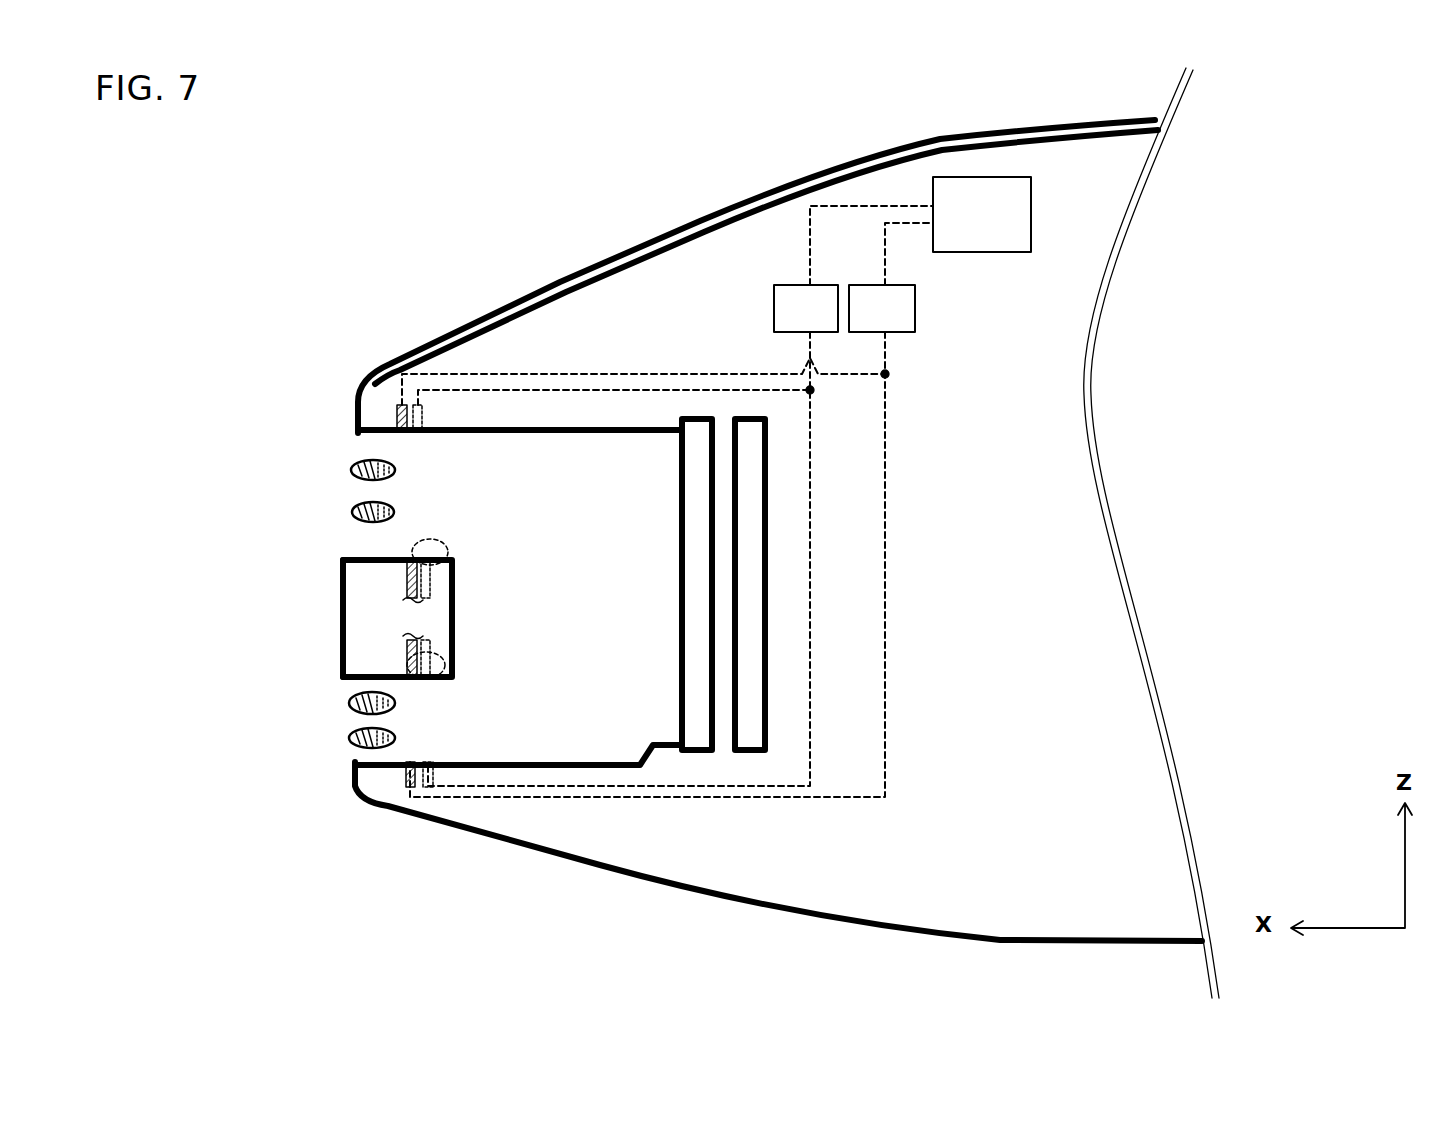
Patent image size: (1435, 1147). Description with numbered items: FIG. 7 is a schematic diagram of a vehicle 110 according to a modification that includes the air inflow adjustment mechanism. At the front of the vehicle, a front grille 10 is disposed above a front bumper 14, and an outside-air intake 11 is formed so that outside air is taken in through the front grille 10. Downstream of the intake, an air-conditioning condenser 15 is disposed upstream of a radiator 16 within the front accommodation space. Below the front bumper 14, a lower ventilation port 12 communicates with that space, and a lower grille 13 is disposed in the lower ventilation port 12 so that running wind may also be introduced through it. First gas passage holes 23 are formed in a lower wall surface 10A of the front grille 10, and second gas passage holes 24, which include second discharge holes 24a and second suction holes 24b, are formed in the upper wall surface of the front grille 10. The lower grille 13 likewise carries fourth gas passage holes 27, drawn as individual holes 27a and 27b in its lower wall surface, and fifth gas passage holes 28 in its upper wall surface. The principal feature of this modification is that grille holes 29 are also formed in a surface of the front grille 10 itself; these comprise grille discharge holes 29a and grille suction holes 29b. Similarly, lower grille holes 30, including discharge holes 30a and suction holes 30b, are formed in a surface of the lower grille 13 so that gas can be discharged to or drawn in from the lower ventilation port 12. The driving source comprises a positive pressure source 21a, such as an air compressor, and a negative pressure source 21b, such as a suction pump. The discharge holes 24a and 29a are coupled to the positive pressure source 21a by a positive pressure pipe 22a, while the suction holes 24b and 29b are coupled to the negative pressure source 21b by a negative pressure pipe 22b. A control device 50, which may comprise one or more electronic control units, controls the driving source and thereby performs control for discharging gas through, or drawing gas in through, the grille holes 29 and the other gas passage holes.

The vehicle 110 is at (368, 153).
The control device 50 is at (990, 177).
The positive pressure source 21a is at (785, 285).
The negative pressure source 21b is at (915, 302).
The positive pressure pipe 22a is at (623, 388).
The negative pressure pipe 22b is at (885, 507).
The second gas passage holes 24 is at (447, 336).
The second discharge holes 24a is at (420, 403).
The second suction holes 24b is at (398, 418).
The fourth gas passage holes 27 is at (462, 844).
The first lower terminal 27a is at (435, 770).
The second lower terminal 27b is at (403, 776).
The front grille 10 is at (382, 451).
The lower wall surface 10A is at (362, 550).
The outside-air intake 11 is at (320, 538).
The lower ventilation port 12 is at (323, 727).
The lower grille 13 is at (350, 700).
The front bumper 14 is at (455, 617).
The air-conditioning condenser 15 is at (693, 753).
The radiator 16 is at (752, 753).
The first gas passage holes 23 is at (442, 548).
The fifth gas passage holes 28 is at (455, 664).
The grille holes 29 is at (382, 491).
The grille discharge holes 29a is at (352, 512).
The grille suction holes 29b is at (394, 472).
The lower grille holes 30 is at (285, 797).
The discharge holes 30a is at (350, 740).
The suction holes 30b is at (370, 749).